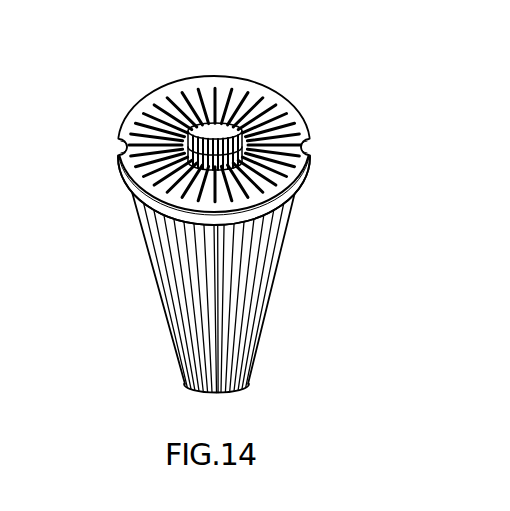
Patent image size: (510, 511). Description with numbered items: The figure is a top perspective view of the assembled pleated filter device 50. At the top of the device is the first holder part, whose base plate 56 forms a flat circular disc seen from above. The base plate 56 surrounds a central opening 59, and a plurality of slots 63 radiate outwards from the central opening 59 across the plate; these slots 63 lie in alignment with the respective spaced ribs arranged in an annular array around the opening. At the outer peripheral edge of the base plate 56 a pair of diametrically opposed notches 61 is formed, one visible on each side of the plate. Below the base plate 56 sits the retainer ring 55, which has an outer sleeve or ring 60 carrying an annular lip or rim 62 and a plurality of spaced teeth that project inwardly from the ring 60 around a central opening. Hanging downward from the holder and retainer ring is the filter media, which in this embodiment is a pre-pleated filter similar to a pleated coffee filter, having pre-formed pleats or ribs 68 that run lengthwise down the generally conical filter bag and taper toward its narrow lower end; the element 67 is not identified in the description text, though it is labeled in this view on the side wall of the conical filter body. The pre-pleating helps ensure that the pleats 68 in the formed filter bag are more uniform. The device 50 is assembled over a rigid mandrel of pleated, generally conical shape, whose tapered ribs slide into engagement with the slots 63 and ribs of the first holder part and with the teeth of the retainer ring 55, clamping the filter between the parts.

The pleated filter device 50 is at (206, 291).
The retainer ring 55 is at (219, 153).
The base plate 56 is at (267, 100).
The central opening 59 is at (212, 98).
The outer sleeve or ring 60 is at (140, 212).
The notches 61 is at (121, 145).
The annular lip or rim 62 is at (124, 149).
The slots 63 is at (233, 95).
The filter media 67 is at (165, 315).
The pre-formed pleats or ribs 68 is at (245, 303).